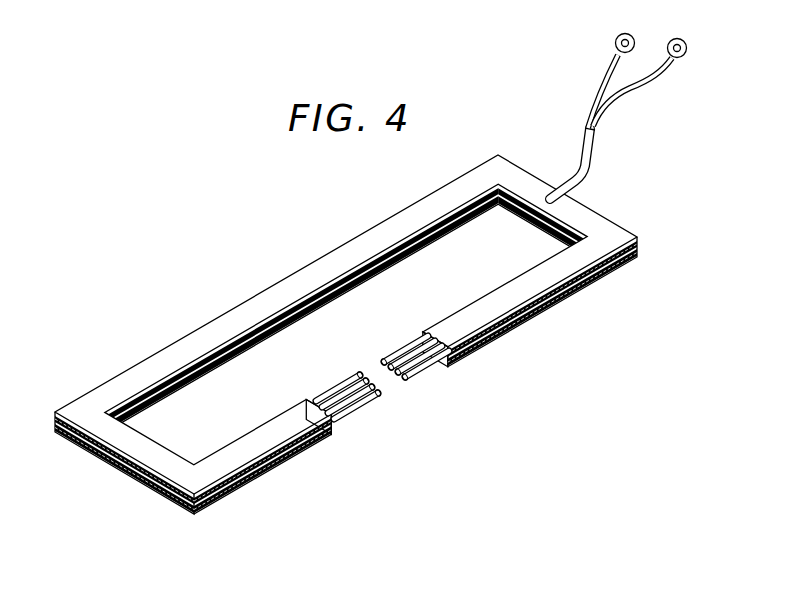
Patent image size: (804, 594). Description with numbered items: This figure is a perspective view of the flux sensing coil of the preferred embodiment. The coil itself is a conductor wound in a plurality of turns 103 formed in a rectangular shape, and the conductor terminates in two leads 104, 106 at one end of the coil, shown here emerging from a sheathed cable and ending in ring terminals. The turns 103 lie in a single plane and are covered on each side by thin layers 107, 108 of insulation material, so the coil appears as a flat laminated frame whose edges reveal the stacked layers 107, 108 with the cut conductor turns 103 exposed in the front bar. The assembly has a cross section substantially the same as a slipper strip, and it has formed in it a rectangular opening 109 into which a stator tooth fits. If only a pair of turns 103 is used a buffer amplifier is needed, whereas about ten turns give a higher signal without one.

The turns 103 is at (425, 368).
The lead 104 is at (604, 66).
The lead 106 is at (662, 82).
The layer of insulation material 107 is at (87, 405).
The layer of insulation material 108 is at (268, 470).
The rectangular opening 109 is at (345, 317).